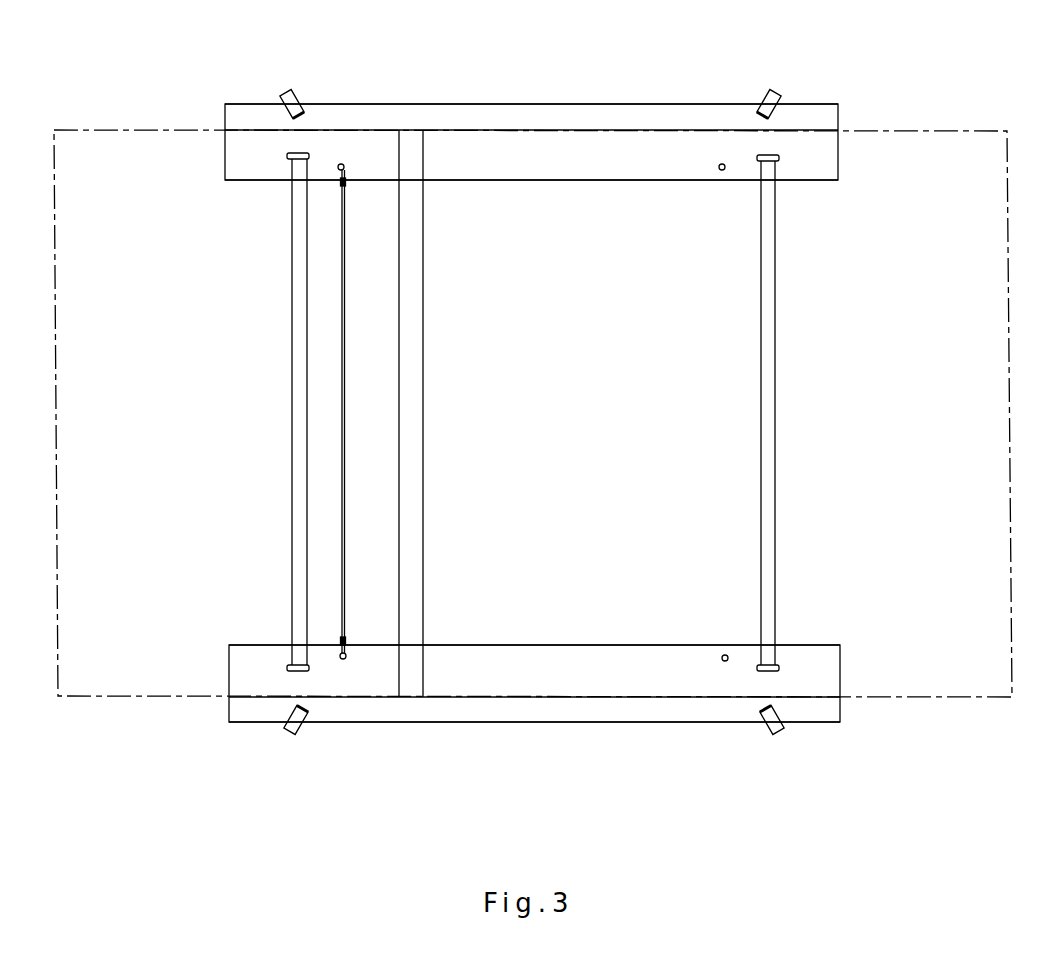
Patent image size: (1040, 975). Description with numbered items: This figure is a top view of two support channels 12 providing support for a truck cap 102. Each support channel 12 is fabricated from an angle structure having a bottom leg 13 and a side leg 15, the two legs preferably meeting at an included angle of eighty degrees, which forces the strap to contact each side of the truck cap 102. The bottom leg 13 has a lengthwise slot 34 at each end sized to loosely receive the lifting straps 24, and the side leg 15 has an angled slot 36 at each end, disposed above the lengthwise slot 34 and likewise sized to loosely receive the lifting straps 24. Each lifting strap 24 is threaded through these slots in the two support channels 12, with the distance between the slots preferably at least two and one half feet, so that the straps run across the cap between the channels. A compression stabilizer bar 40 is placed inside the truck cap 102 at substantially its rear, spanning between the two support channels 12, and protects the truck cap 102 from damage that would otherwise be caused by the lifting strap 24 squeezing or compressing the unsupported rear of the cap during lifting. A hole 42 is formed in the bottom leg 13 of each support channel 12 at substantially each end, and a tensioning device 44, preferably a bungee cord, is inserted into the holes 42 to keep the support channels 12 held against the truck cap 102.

The support channel 12 is at (602, 96).
The bottom leg 13 is at (555, 182).
The side leg 15 is at (510, 115).
The lifting strap 24 is at (293, 425).
The lengthwise slot 34 is at (288, 157).
The angled slot 36 is at (300, 100).
The compression stabilizer bar 40 is at (411, 328).
The hole 42 is at (342, 163).
The tensioning device 44 is at (345, 508).
The truck cap 102 is at (916, 130).